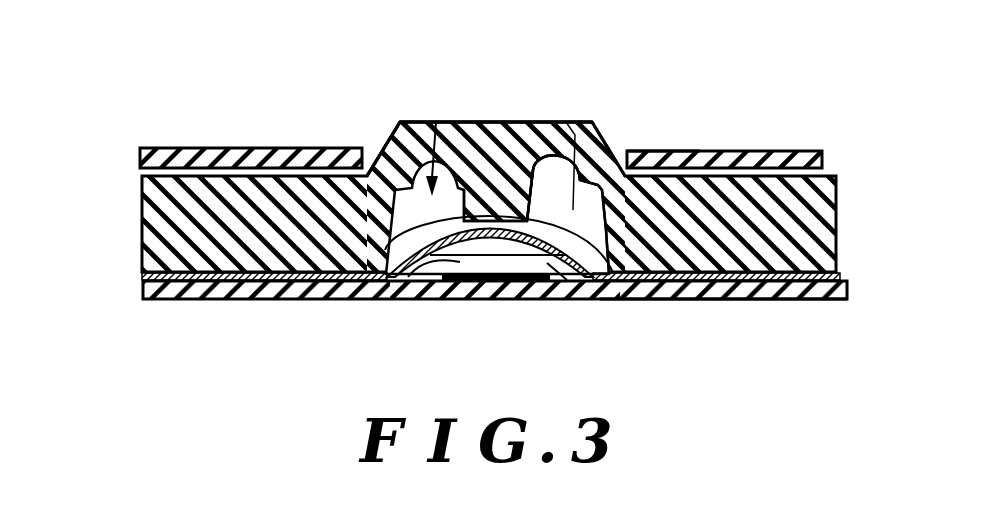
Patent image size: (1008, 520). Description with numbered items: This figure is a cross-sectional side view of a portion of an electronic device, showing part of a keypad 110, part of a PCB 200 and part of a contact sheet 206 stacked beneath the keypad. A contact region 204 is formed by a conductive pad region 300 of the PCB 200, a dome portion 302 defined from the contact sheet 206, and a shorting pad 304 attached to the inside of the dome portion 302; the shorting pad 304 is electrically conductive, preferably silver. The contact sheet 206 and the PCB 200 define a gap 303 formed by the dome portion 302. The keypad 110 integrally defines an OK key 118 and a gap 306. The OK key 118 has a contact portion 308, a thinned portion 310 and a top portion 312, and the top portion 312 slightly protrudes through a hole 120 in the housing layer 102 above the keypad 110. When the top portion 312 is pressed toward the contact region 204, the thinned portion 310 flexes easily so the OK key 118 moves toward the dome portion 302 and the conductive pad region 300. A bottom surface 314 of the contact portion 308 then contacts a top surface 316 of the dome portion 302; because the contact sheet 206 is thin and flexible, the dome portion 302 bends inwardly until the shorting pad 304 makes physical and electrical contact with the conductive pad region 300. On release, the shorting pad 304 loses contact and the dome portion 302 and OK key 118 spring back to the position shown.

The top conductive layer 102 is at (155, 150).
The keypad 110 is at (140, 187).
The OK key 118 is at (566, 122).
The hole 120 is at (373, 147).
The PCB 200 is at (187, 293).
The contact region 204 is at (436, 122).
The contact sheet 206 is at (147, 268).
The conductive pad region 300 is at (400, 278).
The dome portion 302 is at (715, 297).
The gap 303 is at (567, 280).
The shorting pad 304 is at (504, 222).
The gap 306 is at (580, 169).
The contact portion 308 is at (470, 135).
The thinned portion 310 is at (398, 124).
The top portion 312 is at (530, 122).
The bottom surface 314 is at (517, 282).
The top surface 316 is at (329, 280).